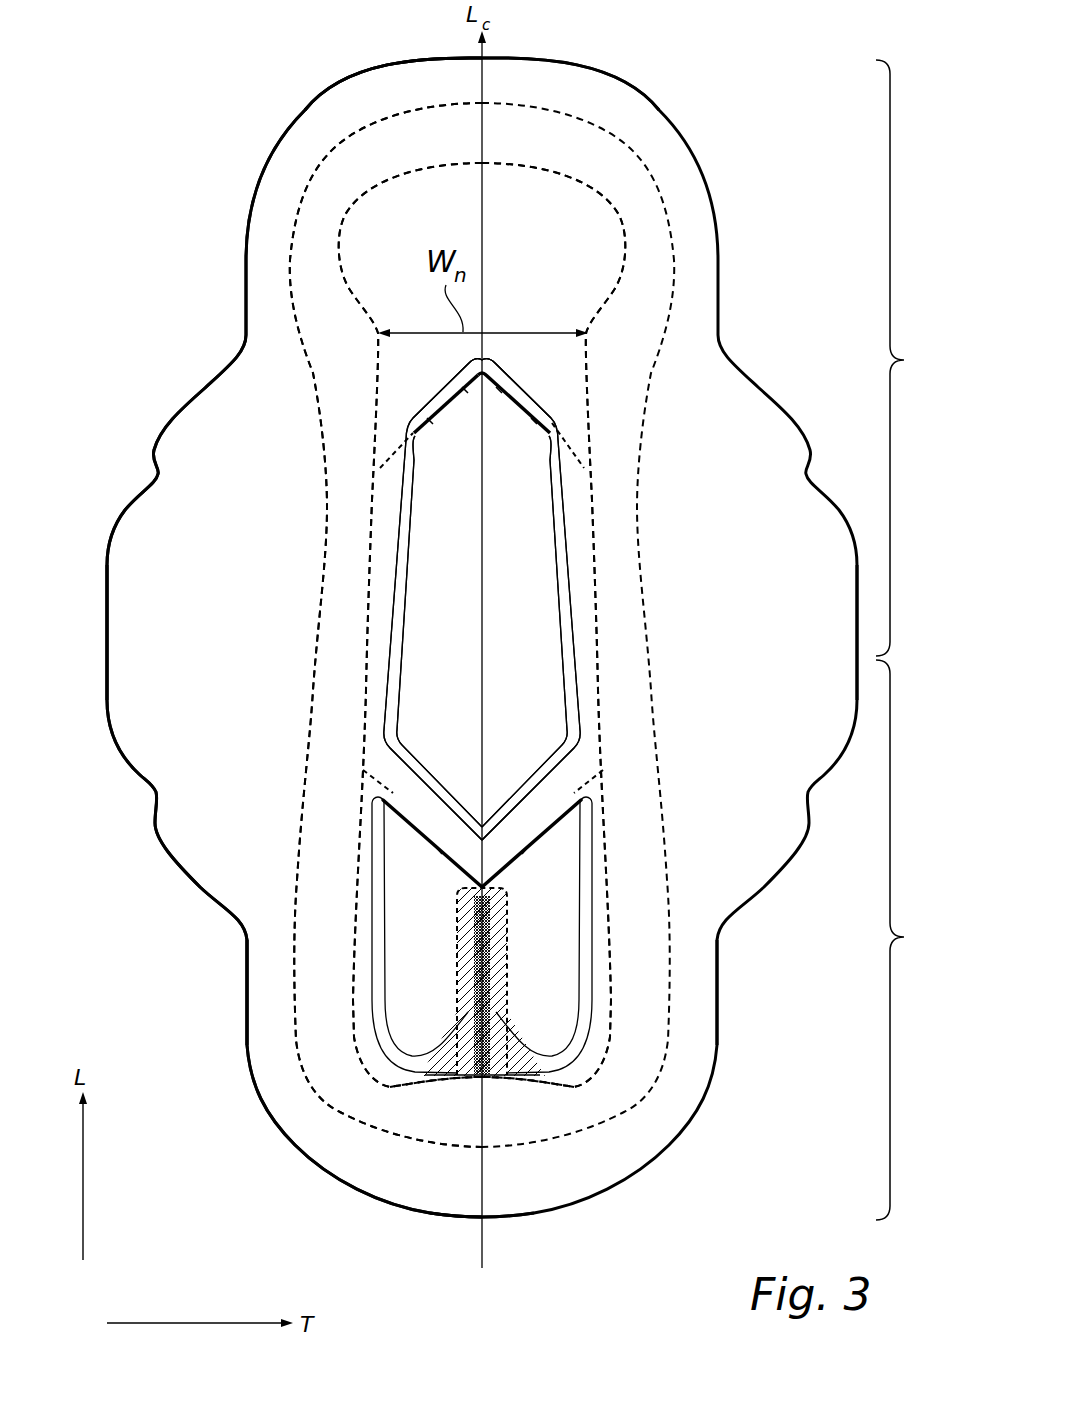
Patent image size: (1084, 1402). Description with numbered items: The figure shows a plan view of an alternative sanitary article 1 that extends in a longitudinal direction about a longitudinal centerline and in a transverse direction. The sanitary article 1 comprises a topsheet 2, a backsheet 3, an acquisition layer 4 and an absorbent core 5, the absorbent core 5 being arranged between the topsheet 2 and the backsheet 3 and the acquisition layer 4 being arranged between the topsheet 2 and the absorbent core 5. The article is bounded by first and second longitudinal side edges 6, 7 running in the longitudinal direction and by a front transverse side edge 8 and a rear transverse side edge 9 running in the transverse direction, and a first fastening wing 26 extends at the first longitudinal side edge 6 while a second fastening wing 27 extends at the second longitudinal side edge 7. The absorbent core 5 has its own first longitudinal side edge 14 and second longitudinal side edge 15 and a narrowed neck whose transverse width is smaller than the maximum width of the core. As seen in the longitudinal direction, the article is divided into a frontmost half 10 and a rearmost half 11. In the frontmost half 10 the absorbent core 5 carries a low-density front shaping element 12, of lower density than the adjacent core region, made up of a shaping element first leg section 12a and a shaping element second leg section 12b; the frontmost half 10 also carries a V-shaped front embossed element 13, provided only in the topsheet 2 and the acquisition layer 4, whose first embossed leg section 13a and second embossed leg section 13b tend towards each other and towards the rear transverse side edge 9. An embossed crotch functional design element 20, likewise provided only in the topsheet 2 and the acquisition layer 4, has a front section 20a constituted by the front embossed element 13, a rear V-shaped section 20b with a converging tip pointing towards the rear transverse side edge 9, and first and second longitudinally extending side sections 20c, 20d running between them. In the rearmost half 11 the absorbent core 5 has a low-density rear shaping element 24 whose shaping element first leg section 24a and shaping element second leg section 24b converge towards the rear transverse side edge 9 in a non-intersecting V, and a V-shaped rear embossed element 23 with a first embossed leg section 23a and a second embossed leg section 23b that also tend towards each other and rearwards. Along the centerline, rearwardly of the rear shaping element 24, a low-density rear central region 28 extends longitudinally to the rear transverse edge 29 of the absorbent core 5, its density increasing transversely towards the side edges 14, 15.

The sanitary article 1 is at (800, 222).
The topsheet 2 is at (320, 170).
The backsheet 3 is at (330, 194).
The acquisition layer 4 is at (592, 155).
The absorbent core 5 is at (578, 236).
The first longitudinal side edge 6 is at (720, 1010).
The second longitudinal side edge 7 is at (245, 935).
The front transverse side edge 8 is at (548, 62).
The rear transverse side edge 9 is at (470, 1219).
The frontmost half 10 is at (908, 358).
The rearmost half 11 is at (908, 940).
The low-density front shaping element 12 is at (556, 425).
The shaping element first leg section 12a is at (568, 445).
The shaping element second leg section 12b is at (430, 410).
The V-shaped front embossed element 13 is at (523, 393).
The first embossed leg section 13a is at (514, 403).
The second embossed leg section 13b is at (443, 388).
The first longitudinal side edge of the absorbent core 14 is at (590, 527).
The second longitudinal side edge of the absorbent core 15 is at (363, 705).
The embossed crotch functional design element 20 is at (563, 557).
The front section 20a is at (517, 378).
The rear V-shaped section 20b is at (530, 790).
The first longitudinally extending side section 20c is at (570, 650).
The second longitudinally extending side section 20d is at (393, 607).
The V-shaped rear embossed element 23 is at (545, 840).
The first embossed leg section 23a is at (531, 843).
The second embossed leg section 23b is at (417, 833).
The low-density rear shaping element 24 is at (522, 850).
The shaping element first leg section 24a is at (588, 781).
The shaping element second leg section 24b is at (440, 845).
The first fastening wing 26 is at (815, 712).
The second fastening wing 27 is at (140, 680).
The low-density rear central region 28 is at (500, 980).
The rear transverse edge of the absorbent core 29 is at (484, 1078).